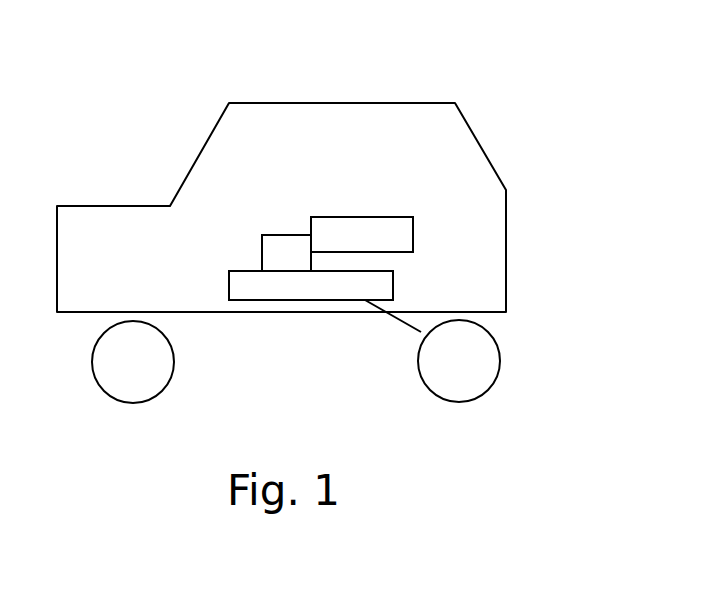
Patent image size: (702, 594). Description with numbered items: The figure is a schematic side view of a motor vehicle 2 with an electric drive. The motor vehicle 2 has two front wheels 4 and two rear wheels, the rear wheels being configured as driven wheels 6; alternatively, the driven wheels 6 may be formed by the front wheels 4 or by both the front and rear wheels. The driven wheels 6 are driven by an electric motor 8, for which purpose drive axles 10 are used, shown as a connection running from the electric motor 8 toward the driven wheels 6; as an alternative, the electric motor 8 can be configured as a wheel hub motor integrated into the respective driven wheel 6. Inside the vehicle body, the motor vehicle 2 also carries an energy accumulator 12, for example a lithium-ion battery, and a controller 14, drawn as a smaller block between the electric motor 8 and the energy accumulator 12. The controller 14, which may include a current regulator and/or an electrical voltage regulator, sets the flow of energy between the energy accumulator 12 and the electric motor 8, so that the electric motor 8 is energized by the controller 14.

The motor vehicle 2 is at (508, 71).
The front wheels 4 is at (124, 364).
The driven wheels 6 is at (475, 363).
The electric motor 8 is at (245, 290).
The drive axles 10 is at (421, 332).
The energy accumulator 12 is at (365, 240).
The controller 14 is at (282, 252).